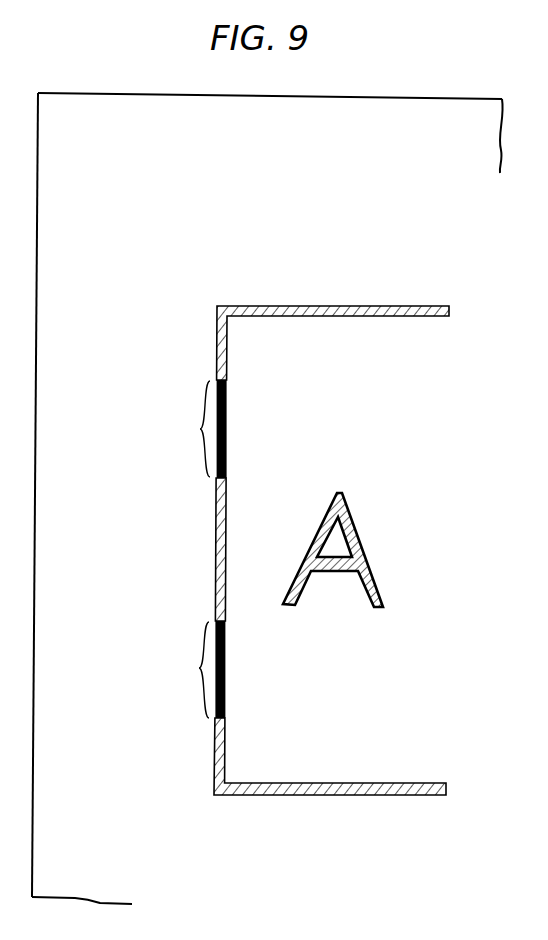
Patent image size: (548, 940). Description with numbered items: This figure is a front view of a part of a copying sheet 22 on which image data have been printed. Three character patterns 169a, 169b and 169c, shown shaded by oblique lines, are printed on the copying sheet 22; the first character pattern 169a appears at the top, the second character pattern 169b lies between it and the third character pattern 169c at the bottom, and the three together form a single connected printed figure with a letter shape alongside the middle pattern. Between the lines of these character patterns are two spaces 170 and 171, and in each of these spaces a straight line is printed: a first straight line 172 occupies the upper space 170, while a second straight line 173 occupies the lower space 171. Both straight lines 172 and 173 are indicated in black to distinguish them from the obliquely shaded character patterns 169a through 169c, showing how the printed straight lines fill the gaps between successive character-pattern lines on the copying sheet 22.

The copying sheet 22 is at (427, 108).
The character pattern 169a is at (227, 340).
The character pattern 169b is at (315, 550).
The character pattern 169c is at (312, 784).
The space 170 is at (188, 429).
The space 171 is at (187, 670).
The straight line 172 is at (227, 430).
The straight line 173 is at (225, 663).